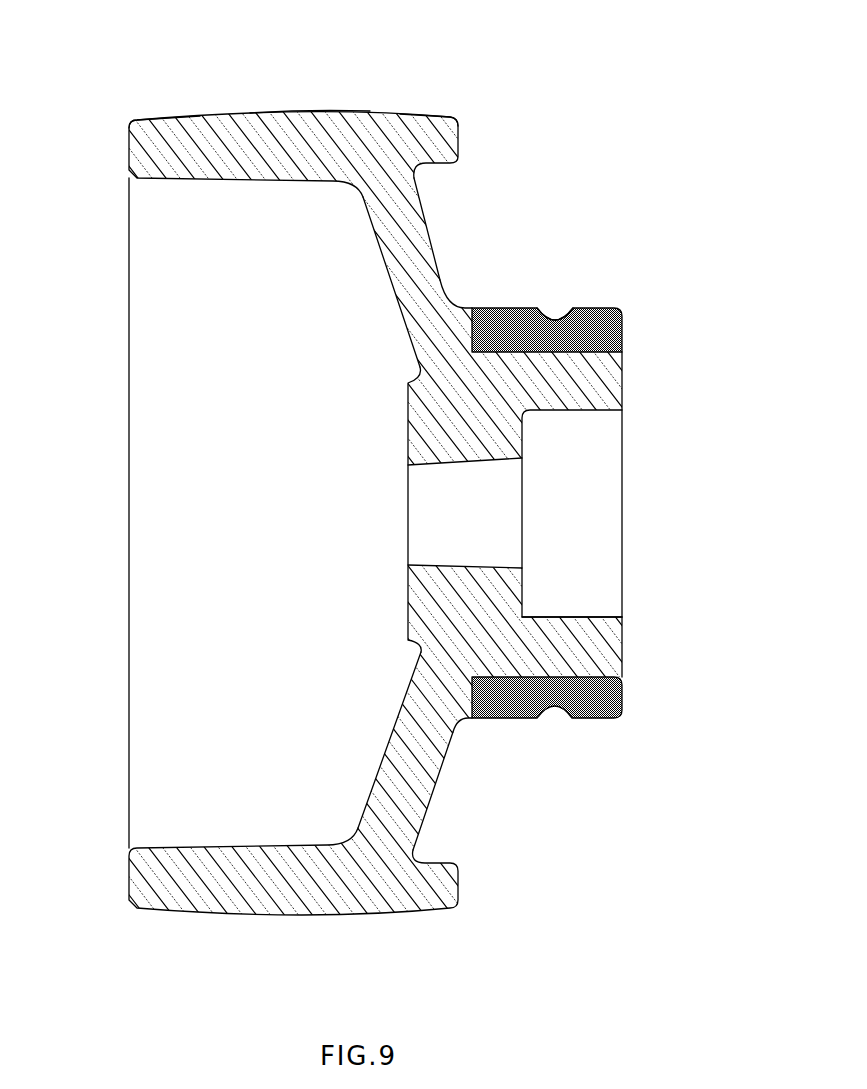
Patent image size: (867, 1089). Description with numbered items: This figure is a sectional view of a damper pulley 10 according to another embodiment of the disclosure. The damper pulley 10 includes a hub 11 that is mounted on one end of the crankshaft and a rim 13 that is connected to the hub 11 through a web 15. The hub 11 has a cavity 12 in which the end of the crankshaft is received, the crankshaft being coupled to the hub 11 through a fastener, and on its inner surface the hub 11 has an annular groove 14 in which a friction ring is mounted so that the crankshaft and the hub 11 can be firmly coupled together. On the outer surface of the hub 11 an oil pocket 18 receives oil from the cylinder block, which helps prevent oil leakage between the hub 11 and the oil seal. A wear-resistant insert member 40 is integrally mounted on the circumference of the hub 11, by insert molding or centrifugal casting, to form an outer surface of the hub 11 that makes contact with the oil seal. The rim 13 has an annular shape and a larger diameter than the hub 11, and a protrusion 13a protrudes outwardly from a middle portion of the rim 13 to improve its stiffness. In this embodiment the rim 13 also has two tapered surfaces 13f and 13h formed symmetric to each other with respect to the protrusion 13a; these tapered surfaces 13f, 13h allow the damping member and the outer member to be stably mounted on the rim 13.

The damper pulley 10 is at (625, 248).
The hub 11 is at (607, 385).
The cavity 12 is at (585, 519).
The rim 13 is at (140, 150).
The protrusion 13a is at (311, 112).
The tapered surface 13f is at (415, 115).
The tapered surface 13h is at (182, 118).
The annular groove 14 is at (582, 615).
The web 15 is at (430, 246).
The oil pocket 18 is at (554, 318).
The wear-resistant insert member 40 is at (607, 332).